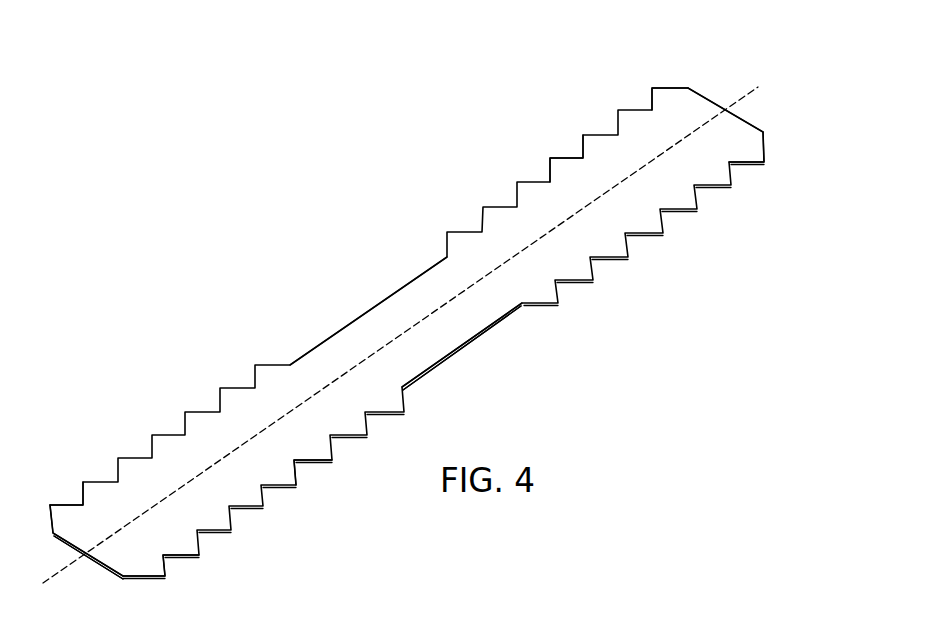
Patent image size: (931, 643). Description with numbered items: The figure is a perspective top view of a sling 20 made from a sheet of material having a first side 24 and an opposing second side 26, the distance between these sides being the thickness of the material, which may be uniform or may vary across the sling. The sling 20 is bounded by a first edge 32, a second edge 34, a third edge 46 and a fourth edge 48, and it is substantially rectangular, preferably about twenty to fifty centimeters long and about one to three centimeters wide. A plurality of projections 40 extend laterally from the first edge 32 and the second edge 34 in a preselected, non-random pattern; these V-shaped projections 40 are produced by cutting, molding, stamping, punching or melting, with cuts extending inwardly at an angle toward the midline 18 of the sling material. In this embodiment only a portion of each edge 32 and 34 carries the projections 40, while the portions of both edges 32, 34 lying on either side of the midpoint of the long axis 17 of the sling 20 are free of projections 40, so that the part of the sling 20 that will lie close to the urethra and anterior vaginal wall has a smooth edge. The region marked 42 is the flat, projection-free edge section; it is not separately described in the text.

The long axis 17 is at (700, 126).
The midline 18 is at (745, 96).
The sling 20 is at (661, 78).
The first side 24 is at (123, 523).
The second side 26 is at (318, 444).
The first edge 32 is at (60, 503).
The second edge 34 is at (164, 566).
The projections 40 is at (548, 157).
The flat section 42 is at (395, 290).
The third edge 46 is at (92, 557).
The fourth edge 48 is at (707, 105).